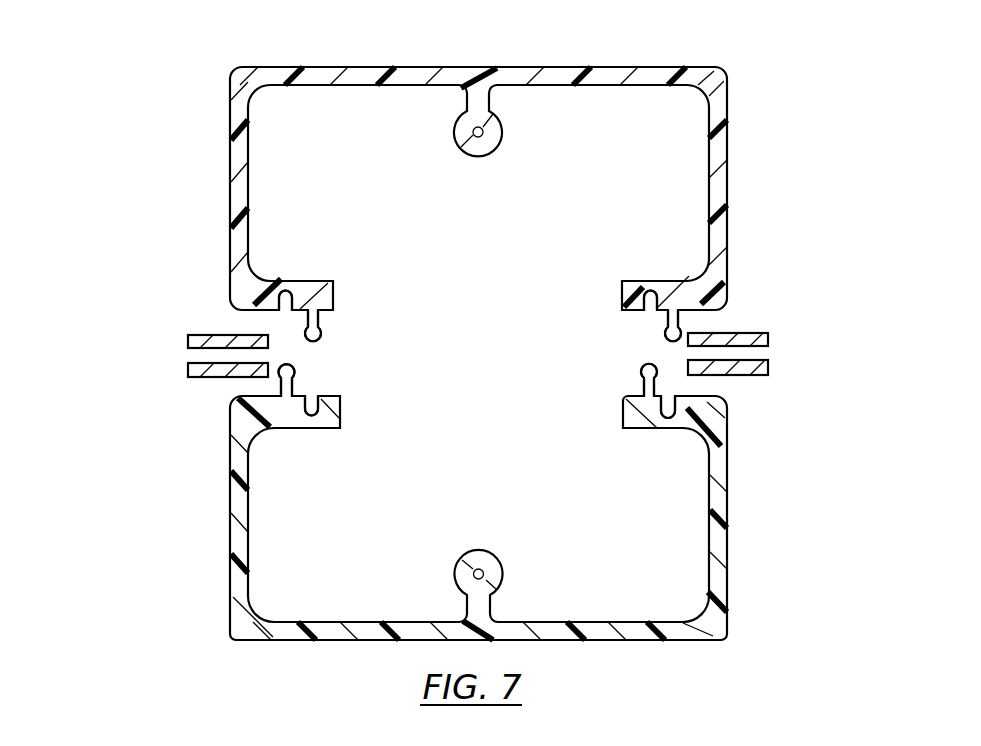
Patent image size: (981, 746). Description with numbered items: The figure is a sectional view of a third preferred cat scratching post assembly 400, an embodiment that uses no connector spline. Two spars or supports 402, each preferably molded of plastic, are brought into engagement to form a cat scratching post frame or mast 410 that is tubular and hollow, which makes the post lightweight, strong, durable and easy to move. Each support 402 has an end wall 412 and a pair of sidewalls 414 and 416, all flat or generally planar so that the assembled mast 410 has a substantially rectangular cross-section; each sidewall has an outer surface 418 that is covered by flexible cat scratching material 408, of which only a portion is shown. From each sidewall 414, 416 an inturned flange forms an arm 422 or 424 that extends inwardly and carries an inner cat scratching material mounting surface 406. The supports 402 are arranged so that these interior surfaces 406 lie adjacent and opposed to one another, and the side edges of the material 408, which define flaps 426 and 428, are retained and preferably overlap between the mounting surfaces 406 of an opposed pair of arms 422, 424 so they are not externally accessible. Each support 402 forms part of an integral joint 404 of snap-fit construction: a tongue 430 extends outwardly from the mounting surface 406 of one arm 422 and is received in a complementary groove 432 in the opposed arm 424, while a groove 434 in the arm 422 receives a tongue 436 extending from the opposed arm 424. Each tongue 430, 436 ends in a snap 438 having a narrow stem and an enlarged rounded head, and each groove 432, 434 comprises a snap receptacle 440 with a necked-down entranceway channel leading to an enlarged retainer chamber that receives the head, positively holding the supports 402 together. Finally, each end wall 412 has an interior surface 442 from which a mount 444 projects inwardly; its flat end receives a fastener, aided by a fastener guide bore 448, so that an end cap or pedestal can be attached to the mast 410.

The cat scratching post assembly 400 is at (242, 60).
The support 402 is at (702, 60).
The integral joint 404 is at (233, 320).
The inner cat scratching material mounting surface 406 is at (324, 312).
The flexible cat scratching material 408 is at (223, 381).
The mast 410 is at (726, 637).
The end wall 412 is at (334, 64).
The sidewall 414 is at (731, 148).
The sidewall 416 is at (227, 158).
The outer surface 418 is at (604, 64).
The arm 422 is at (297, 429).
The arm 424 is at (338, 285).
The flap 426 is at (197, 338).
The flap 428 is at (190, 372).
The tongue 430 is at (262, 392).
The groove 432 is at (314, 275).
The groove 434 is at (339, 430).
The tongue 436 is at (328, 330).
The snap 438 is at (297, 368).
The snap receptacle 440 is at (302, 277).
The interior surface 442 is at (345, 88).
The mount 444 is at (496, 124).
The fastener guide bore 448 is at (473, 130).